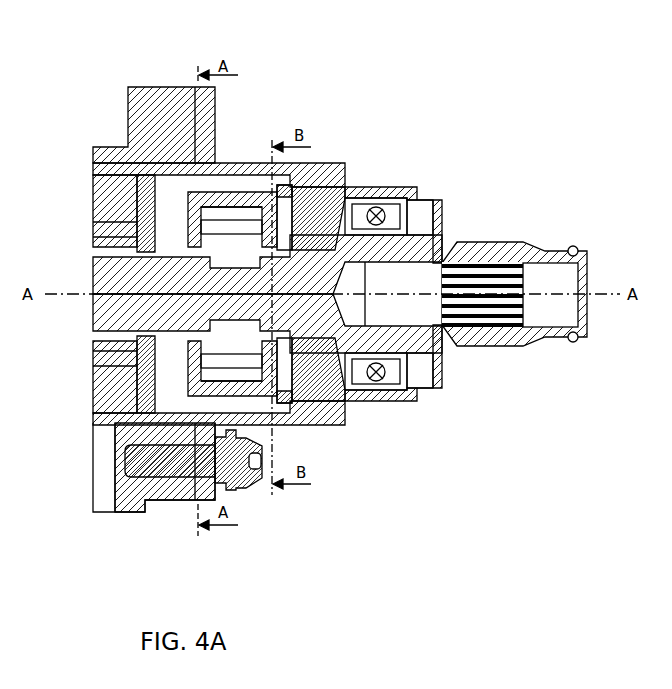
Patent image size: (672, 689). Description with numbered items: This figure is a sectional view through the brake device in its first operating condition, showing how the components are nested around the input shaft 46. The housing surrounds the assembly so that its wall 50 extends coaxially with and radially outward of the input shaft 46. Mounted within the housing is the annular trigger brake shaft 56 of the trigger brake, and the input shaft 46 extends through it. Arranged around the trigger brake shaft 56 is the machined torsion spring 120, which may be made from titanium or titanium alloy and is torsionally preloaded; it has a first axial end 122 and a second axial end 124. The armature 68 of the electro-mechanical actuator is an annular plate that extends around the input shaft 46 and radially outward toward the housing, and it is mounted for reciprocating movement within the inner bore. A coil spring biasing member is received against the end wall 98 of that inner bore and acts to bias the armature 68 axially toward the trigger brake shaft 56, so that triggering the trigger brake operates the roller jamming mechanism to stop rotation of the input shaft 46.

The input shaft 46 is at (498, 240).
The wall 50 is at (322, 165).
The trigger brake shaft 56 is at (240, 358).
The armature 68 is at (150, 163).
The end wall 98 is at (345, 200).
The machined torsion spring 120 is at (238, 192).
The first axial end 122 is at (199, 190).
The second axial end 124 is at (272, 192).